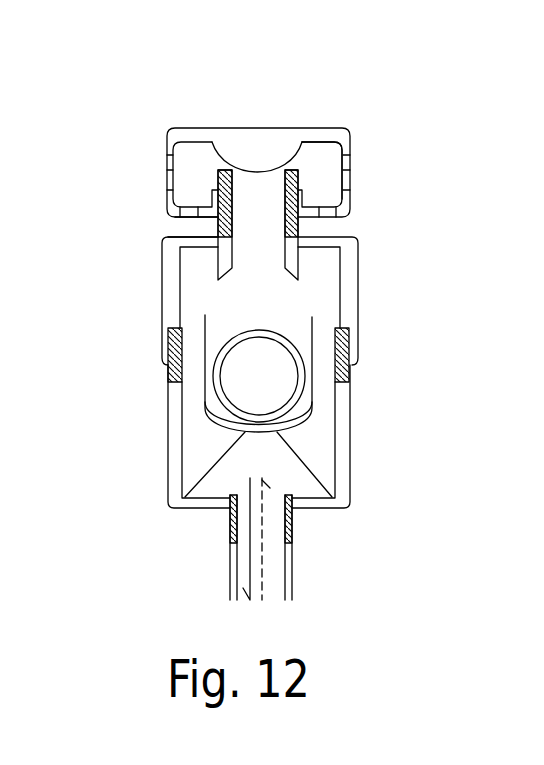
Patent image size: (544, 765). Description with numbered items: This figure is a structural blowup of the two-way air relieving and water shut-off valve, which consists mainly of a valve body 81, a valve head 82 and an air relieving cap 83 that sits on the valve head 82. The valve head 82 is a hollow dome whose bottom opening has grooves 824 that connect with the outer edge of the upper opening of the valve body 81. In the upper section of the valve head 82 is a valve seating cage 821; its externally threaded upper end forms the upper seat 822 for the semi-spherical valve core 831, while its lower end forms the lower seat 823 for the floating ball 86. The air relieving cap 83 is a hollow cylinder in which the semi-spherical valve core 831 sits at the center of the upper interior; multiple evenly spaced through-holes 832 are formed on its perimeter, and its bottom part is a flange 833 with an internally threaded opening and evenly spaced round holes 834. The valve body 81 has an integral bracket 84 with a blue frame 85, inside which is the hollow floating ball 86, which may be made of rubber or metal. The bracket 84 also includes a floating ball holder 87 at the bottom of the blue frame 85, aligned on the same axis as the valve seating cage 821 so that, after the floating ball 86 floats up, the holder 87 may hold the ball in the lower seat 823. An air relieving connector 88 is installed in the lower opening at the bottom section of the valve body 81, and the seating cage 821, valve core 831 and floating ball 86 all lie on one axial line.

The valve body 81 is at (168, 445).
The valve head 82 is at (163, 275).
The valve seating cage 821 is at (218, 231).
The upper seat 822 is at (218, 182).
The lower seat 823 is at (298, 273).
The grooves 824 is at (168, 352).
The air relieving cap 83 is at (260, 132).
The semi-spherical valve core 831 is at (277, 163).
The through-holes 832 is at (347, 185).
The flange 833 is at (297, 185).
The round holes 834 is at (325, 212).
The bracket 84 is at (302, 458).
The blue frame 85 is at (312, 342).
The floating ball 86 is at (275, 378).
The floating ball holder 87 is at (310, 413).
The air relieving connector 88 is at (263, 575).